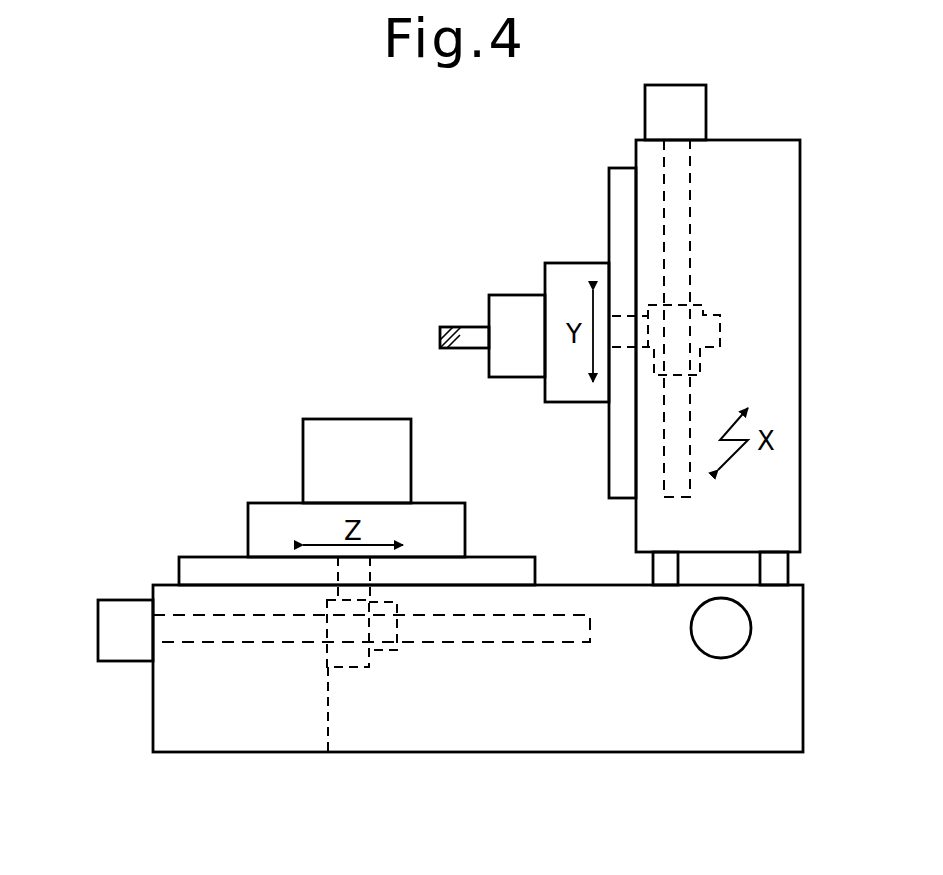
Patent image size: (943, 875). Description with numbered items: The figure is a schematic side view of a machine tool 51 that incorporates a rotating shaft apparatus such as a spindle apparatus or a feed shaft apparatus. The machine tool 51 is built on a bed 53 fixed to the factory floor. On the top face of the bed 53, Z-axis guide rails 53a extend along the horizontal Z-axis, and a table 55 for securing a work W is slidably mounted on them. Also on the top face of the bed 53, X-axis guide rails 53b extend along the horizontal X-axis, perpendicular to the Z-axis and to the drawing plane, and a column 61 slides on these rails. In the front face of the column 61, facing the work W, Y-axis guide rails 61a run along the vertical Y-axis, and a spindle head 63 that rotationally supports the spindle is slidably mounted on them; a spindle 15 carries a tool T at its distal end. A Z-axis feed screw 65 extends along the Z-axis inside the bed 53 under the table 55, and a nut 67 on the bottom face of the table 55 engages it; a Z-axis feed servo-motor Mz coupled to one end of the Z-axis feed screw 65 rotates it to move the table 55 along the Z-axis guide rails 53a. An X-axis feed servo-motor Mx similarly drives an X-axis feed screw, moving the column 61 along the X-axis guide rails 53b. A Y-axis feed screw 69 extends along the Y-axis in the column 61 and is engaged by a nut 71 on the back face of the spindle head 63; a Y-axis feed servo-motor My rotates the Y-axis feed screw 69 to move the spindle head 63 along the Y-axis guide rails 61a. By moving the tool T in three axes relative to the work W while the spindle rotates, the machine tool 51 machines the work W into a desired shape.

The machine tool 51 is at (306, 230).
The bed 53 is at (478, 712).
The Z-axis guide rails 53a is at (190, 572).
The X-axis guide rails 53b is at (678, 570).
The table 55 is at (258, 529).
The column 61 is at (766, 258).
The Y-axis guide rails 61a is at (626, 169).
The spindle head 63 is at (581, 270).
The spindle 15 is at (518, 305).
The Z-axis feed screw 65 is at (205, 645).
The nut 67 is at (329, 757).
The Y-axis feed screw 69 is at (680, 178).
The nut 71 is at (706, 305).
The tool T is at (448, 329).
The work W is at (310, 452).
The Z-axis feed servo-motor Mz is at (125, 630).
The Y-axis feed servo-motor My is at (675, 112).
The X-axis feed servo-motor Mx is at (721, 628).